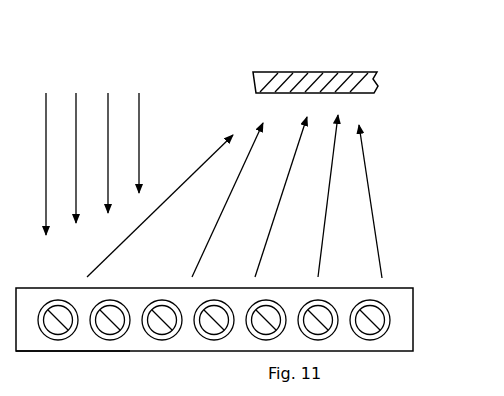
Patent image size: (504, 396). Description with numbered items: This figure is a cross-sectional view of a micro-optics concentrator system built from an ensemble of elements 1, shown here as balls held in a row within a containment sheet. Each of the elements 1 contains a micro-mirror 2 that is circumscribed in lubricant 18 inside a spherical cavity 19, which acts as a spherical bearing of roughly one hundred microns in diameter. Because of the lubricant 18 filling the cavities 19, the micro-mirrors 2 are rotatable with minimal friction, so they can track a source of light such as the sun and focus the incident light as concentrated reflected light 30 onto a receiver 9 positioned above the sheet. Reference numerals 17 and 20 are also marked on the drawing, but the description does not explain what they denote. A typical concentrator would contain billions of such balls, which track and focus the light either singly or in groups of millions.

The elements 1 is at (34, 331).
The micro-mirrors 2 is at (63, 300).
The spherical cavities 19 is at (114, 297).
The lubricant 18 is at (146, 340).
The housing bottom wall 17 is at (80, 342).
The concentrated reflected light 30 is at (78, 107).
The reflected light beams 20 is at (375, 232).
The receiver 9 is at (292, 72).